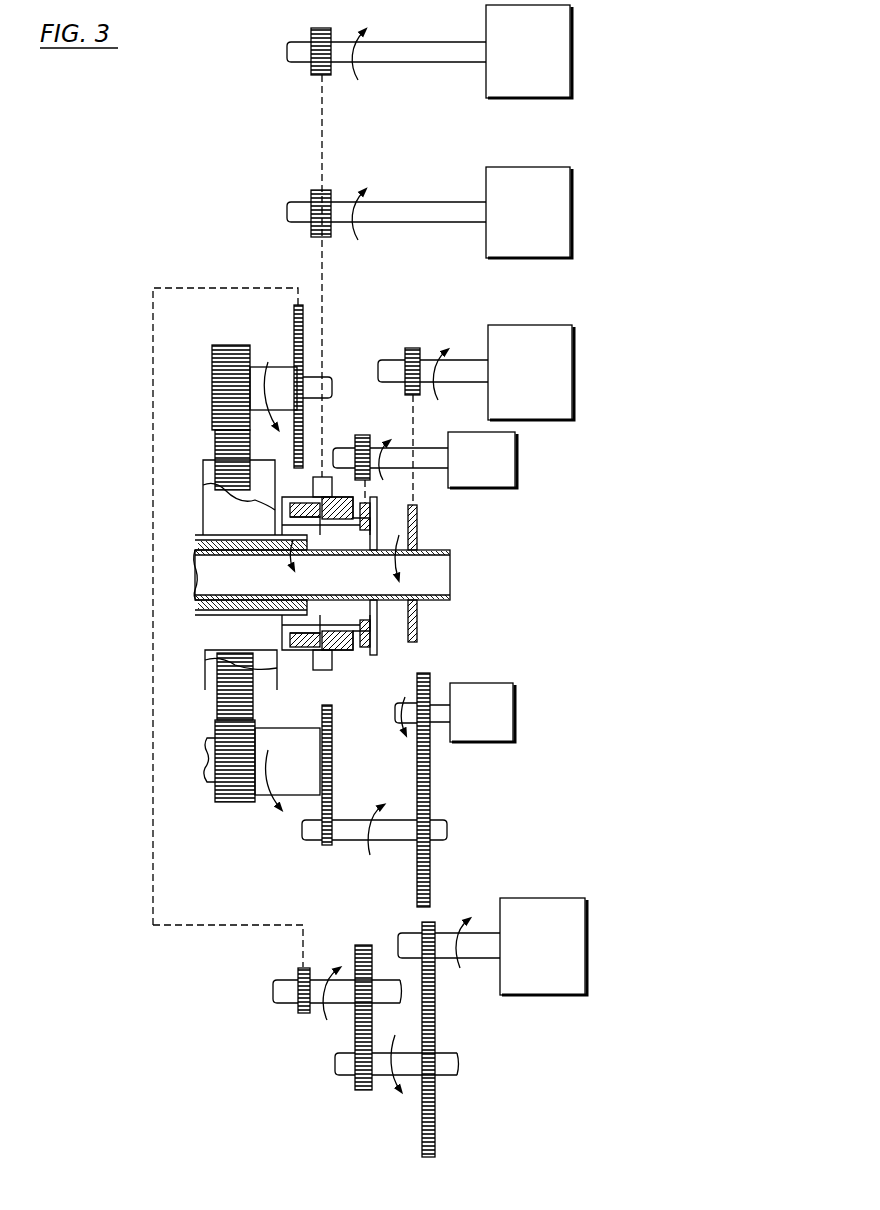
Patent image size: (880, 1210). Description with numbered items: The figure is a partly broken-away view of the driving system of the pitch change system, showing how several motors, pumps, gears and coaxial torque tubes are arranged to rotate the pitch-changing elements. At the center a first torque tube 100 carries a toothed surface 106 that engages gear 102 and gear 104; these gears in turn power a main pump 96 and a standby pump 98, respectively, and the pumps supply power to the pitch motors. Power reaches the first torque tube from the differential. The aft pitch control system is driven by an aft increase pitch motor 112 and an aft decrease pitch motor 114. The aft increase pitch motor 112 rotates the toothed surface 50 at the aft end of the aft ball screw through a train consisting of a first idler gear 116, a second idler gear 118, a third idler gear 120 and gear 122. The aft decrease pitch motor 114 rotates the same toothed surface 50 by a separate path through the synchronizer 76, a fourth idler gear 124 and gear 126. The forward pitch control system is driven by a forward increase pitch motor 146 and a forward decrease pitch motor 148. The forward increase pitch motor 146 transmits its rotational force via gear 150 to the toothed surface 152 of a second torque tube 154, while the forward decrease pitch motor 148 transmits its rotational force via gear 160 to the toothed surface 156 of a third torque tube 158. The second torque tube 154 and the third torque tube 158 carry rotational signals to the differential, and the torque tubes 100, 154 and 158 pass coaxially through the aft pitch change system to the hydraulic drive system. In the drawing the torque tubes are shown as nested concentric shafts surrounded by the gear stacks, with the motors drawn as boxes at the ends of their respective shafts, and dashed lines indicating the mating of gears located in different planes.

The toothed surface 50 is at (216, 456).
The synchronizer 76 is at (268, 732).
The main pump 96 is at (540, 228).
The standby pump 98 is at (540, 68).
The first torque tube 100 is at (215, 533).
The gear 102 is at (322, 29).
The gear 104 is at (324, 191).
The toothed surface 106 is at (316, 480).
The aft increase pitch motor 112 is at (559, 956).
The aft decrease pitch motor 114 is at (498, 722).
The first idler gear 116 is at (266, 366).
The second idler gear 118 is at (322, 1003).
The third idler gear 120 is at (382, 1076).
The gear 122 is at (432, 922).
The fourth idler gear 124 is at (396, 834).
The gear 126 is at (428, 675).
The forward increase pitch motor 146 is at (546, 388).
The forward decrease pitch motor 148 is at (497, 470).
The gear 150 is at (410, 349).
The toothed surface 152 is at (418, 508).
The second torque tube 154 is at (443, 566).
The toothed surface 156 is at (375, 503).
The third torque tube 158 is at (200, 546).
The gear 160 is at (368, 436).